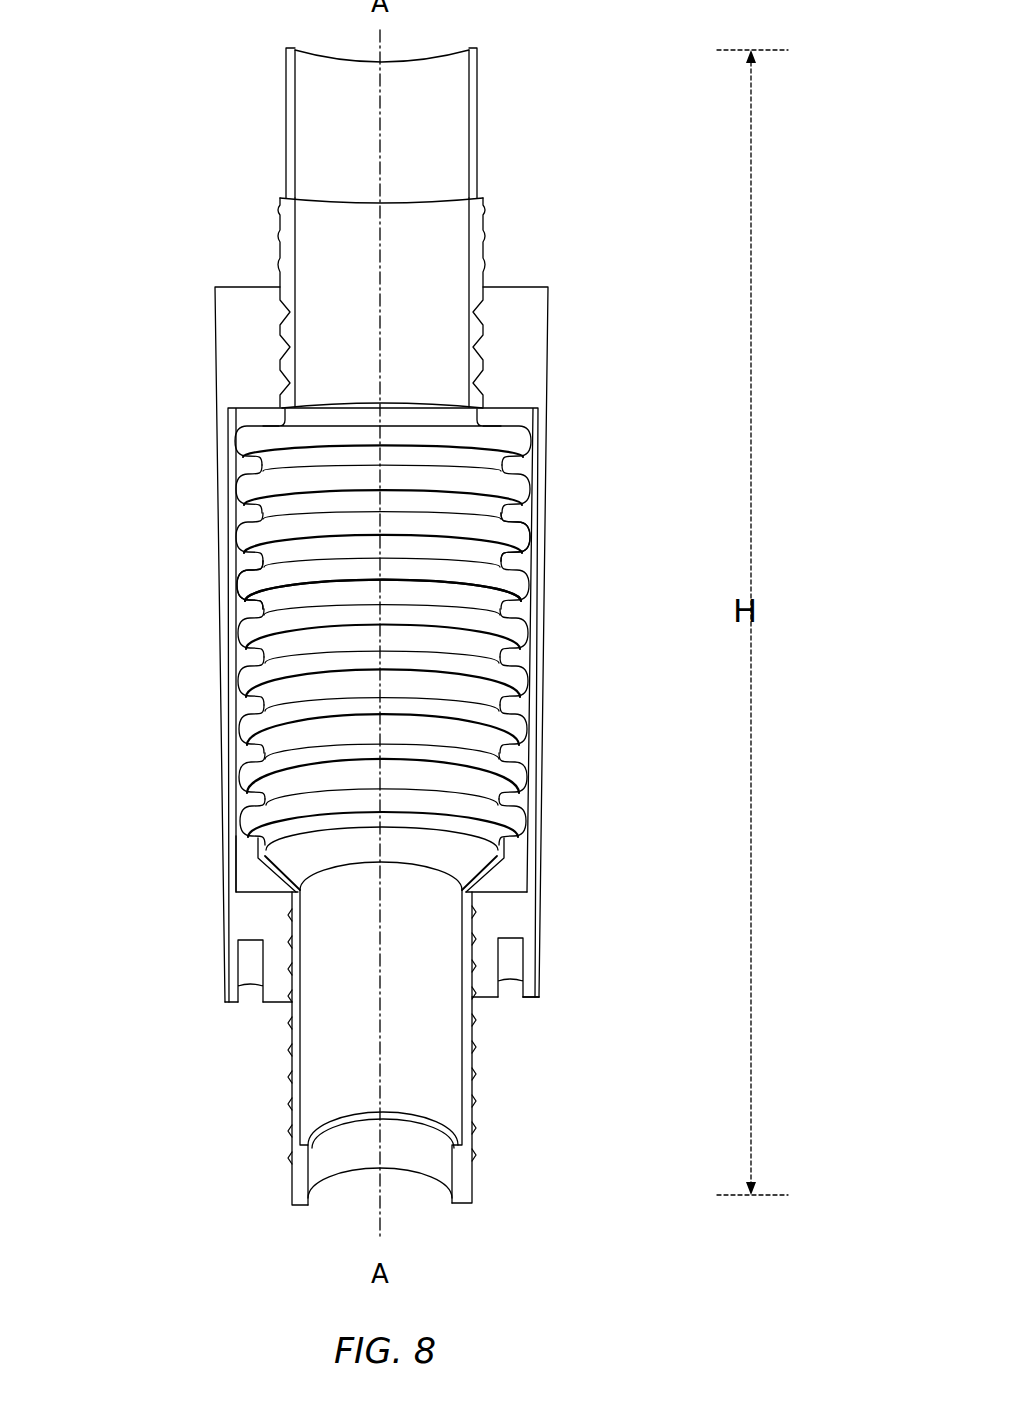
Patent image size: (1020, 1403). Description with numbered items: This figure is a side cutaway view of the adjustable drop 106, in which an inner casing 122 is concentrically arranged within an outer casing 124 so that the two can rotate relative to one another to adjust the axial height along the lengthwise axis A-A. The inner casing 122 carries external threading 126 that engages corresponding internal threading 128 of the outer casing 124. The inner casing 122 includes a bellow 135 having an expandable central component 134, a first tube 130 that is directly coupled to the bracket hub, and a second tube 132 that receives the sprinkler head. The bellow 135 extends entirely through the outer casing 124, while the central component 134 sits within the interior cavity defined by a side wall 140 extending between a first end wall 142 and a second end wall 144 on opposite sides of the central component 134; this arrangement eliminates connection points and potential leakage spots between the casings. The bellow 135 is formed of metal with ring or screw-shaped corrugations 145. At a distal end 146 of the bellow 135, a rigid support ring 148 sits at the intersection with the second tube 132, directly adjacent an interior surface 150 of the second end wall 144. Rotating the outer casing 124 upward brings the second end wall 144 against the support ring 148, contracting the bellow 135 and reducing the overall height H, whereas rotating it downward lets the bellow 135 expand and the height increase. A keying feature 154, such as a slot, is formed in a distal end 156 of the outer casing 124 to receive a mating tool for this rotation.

The adjustable drop 106 is at (125, 129).
The first tube 130 is at (474, 125).
The external threading 126 is at (285, 260).
The internal threading 128 is at (482, 315).
The outer casing 124 is at (228, 357).
The first end wall 142 is at (538, 347).
The side wall 140 is at (530, 484).
The expandable central component 134 is at (259, 564).
The corrugations 145 is at (522, 543).
The bellow 135 is at (440, 597).
The distal end 146 is at (248, 849).
The interior surface 150 is at (253, 887).
The support ring 148 is at (500, 860).
The second end wall 144 is at (527, 926).
The keying feature 154 is at (261, 1000).
The distal end 156 is at (566, 996).
The inner casing 122 is at (335, 1090).
The second tube 132 is at (467, 1180).